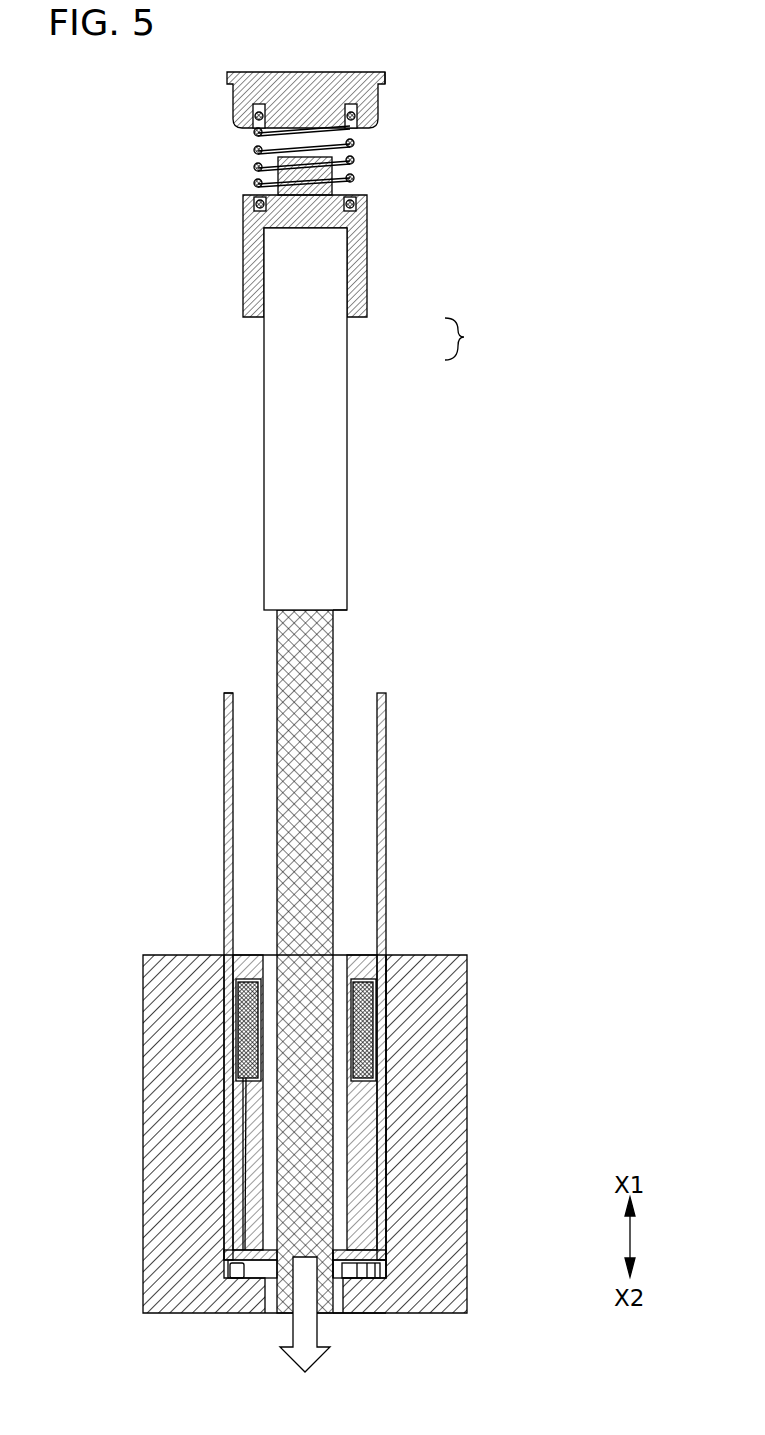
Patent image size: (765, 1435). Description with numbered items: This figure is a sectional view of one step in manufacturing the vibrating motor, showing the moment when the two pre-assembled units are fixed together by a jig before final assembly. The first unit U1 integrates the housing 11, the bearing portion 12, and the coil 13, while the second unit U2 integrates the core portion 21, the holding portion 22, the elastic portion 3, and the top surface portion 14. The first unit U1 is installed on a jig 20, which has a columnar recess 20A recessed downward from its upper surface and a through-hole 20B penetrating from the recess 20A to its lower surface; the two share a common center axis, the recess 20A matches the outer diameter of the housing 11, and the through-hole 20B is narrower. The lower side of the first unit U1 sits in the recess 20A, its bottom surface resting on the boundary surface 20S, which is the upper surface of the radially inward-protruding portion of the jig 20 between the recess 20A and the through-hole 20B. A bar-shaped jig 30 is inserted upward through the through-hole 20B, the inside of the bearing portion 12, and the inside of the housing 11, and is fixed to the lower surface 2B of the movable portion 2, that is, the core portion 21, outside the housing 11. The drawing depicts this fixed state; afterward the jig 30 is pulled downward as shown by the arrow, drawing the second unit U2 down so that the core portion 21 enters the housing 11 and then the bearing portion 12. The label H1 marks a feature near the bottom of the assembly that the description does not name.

The movable portion 2 is at (463, 339).
The lower surface 2B is at (345, 612).
The elastic portion 3 is at (352, 174).
The housing 11 is at (386, 750).
The bearing portion 12 is at (360, 1150).
The coil 13 is at (240, 1028).
The top surface portion 14 is at (368, 94).
The jig 20 is at (443, 966).
The recess 20A is at (387, 1068).
The through-hole 20B is at (338, 1310).
The boundary surface 20S is at (383, 1272).
The core portion 21 is at (328, 373).
The holding portion 22 is at (363, 294).
The bar-shaped jig 30 is at (300, 853).
The hole H1 is at (337, 1257).
The first unit U1 is at (190, 742).
The second unit U2 is at (398, 79).